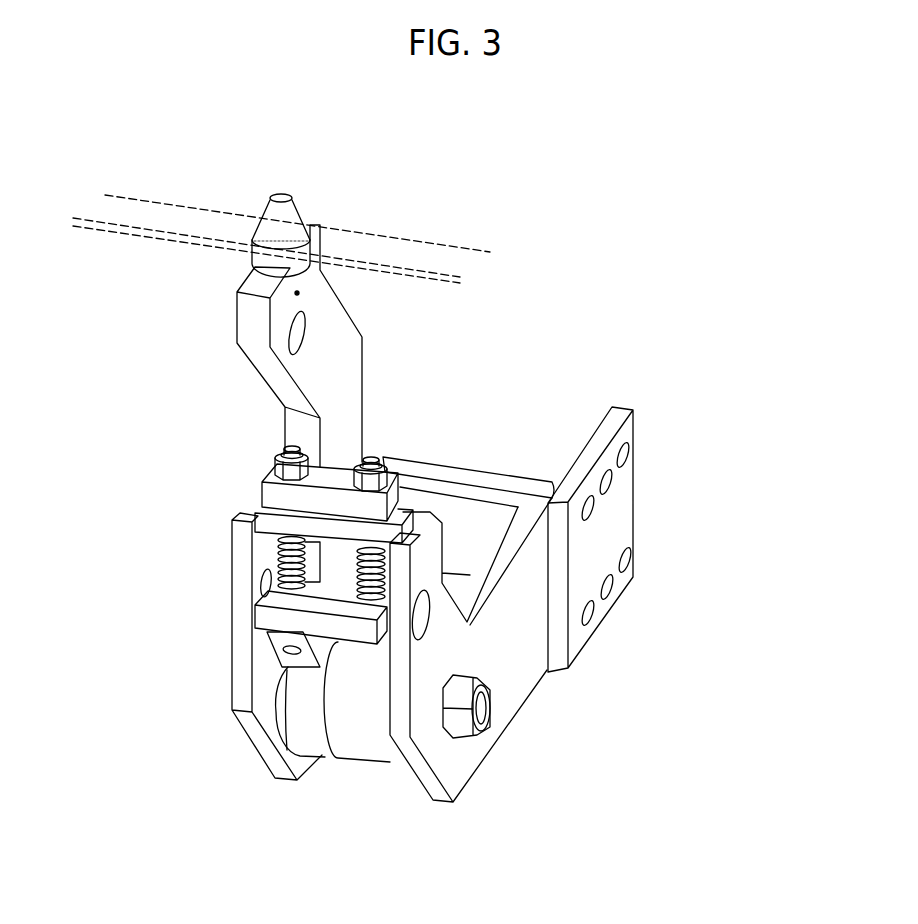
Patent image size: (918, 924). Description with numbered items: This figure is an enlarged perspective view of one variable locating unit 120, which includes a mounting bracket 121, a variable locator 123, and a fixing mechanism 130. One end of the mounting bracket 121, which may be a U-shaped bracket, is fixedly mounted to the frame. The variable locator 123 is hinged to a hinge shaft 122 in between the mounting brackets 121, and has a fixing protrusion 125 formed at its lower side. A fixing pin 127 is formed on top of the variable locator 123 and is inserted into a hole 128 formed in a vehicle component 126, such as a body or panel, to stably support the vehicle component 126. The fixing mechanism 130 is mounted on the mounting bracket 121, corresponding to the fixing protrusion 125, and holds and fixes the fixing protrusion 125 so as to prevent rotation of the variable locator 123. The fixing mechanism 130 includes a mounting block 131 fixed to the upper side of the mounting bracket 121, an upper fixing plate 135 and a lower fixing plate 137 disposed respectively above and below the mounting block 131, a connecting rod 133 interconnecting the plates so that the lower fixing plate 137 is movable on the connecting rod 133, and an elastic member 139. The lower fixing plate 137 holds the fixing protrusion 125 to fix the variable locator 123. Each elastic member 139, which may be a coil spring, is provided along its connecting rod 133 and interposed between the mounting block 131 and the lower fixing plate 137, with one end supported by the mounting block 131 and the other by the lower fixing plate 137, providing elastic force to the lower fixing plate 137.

The variable locating unit 120 is at (512, 375).
The mounting bracket 121 is at (507, 577).
The hinge shaft 122 is at (362, 737).
The variable locator 123 is at (337, 330).
The fixing protrusion 125 is at (265, 633).
The vehicle component 126 is at (418, 240).
The fixing pin 127 is at (270, 218).
The hole 128 is at (300, 207).
The fixing mechanism 130 is at (378, 448).
The mounting block 131 is at (272, 517).
The connecting rod 133 is at (277, 549).
The upper fixing plate 135 is at (277, 496).
The lower fixing plate 137 is at (266, 617).
The elastic member 139 is at (322, 553).